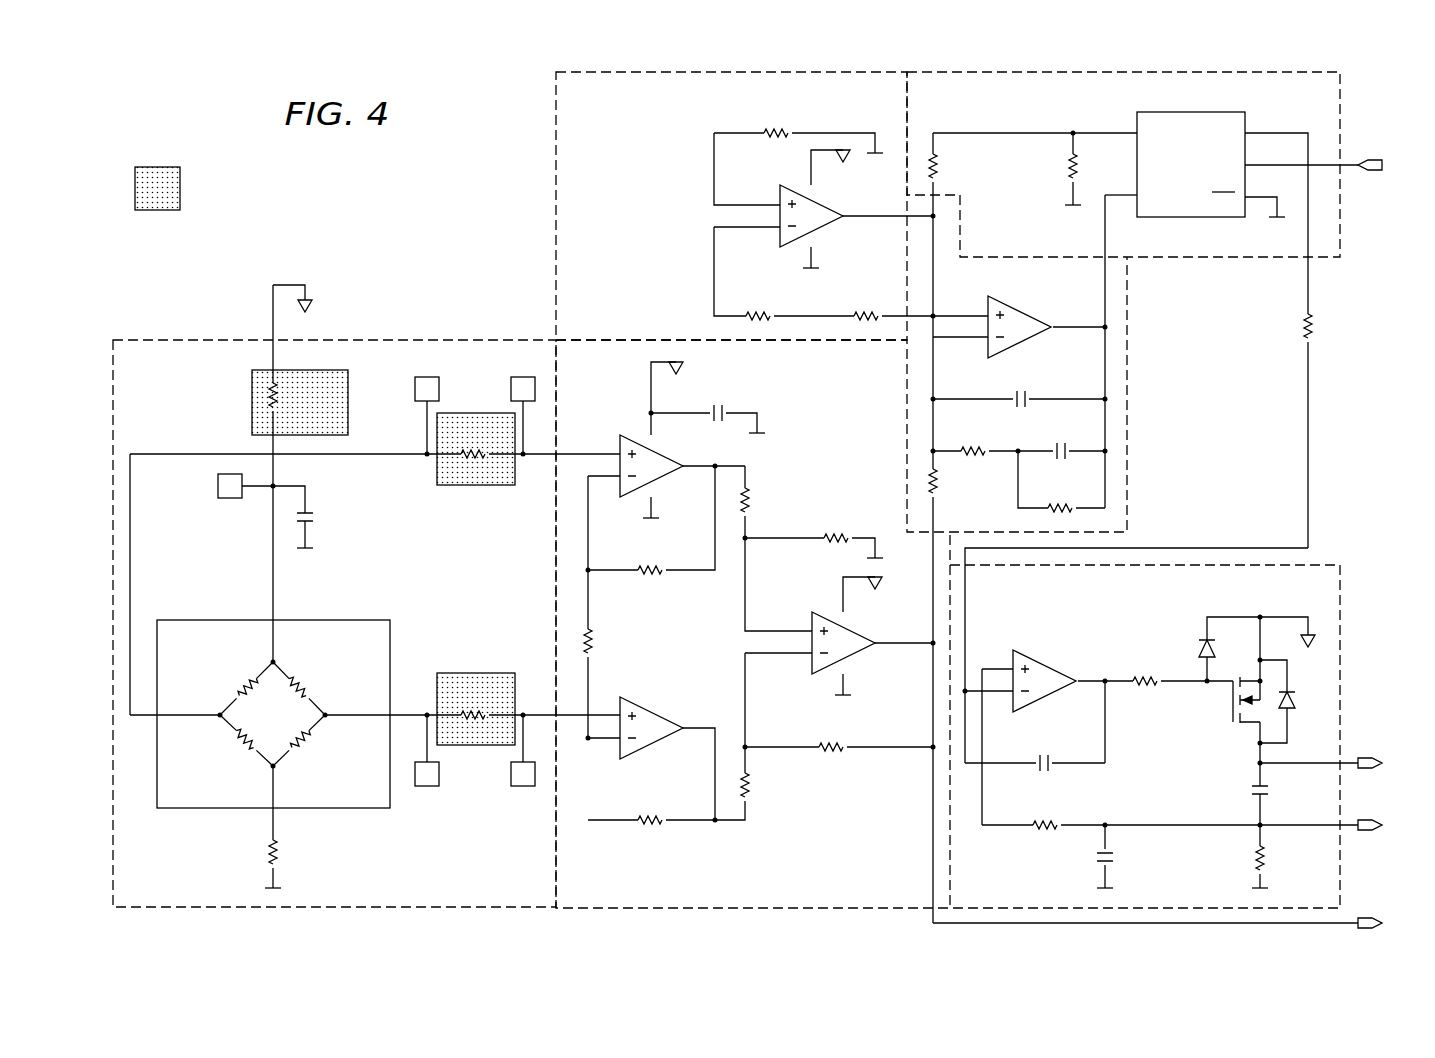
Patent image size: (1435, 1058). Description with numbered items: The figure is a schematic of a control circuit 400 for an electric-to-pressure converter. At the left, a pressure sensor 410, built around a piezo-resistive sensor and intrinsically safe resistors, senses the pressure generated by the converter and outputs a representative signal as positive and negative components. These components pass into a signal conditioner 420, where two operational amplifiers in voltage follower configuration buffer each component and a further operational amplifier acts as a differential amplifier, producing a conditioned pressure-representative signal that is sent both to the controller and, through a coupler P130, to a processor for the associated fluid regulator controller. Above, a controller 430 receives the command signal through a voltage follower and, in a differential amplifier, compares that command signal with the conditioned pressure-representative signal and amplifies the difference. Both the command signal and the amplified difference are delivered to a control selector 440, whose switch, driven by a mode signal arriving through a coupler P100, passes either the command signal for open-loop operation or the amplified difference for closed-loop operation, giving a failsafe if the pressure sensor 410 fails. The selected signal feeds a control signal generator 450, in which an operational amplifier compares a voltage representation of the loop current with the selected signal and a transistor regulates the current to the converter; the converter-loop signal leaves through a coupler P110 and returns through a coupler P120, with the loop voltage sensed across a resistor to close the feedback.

The control circuit 400 is at (486, 213).
The pressure sensor 410 is at (158, 407).
The signal conditioner 420 is at (823, 409).
The controller 430 is at (617, 239).
The control selector 440 is at (1346, 119).
The control signal generator 450 is at (1344, 632).
The coupler P100 is at (1393, 166).
The coupler P110 is at (1393, 764).
The coupler P120 is at (1393, 826).
The coupler P130 is at (1181, 924).